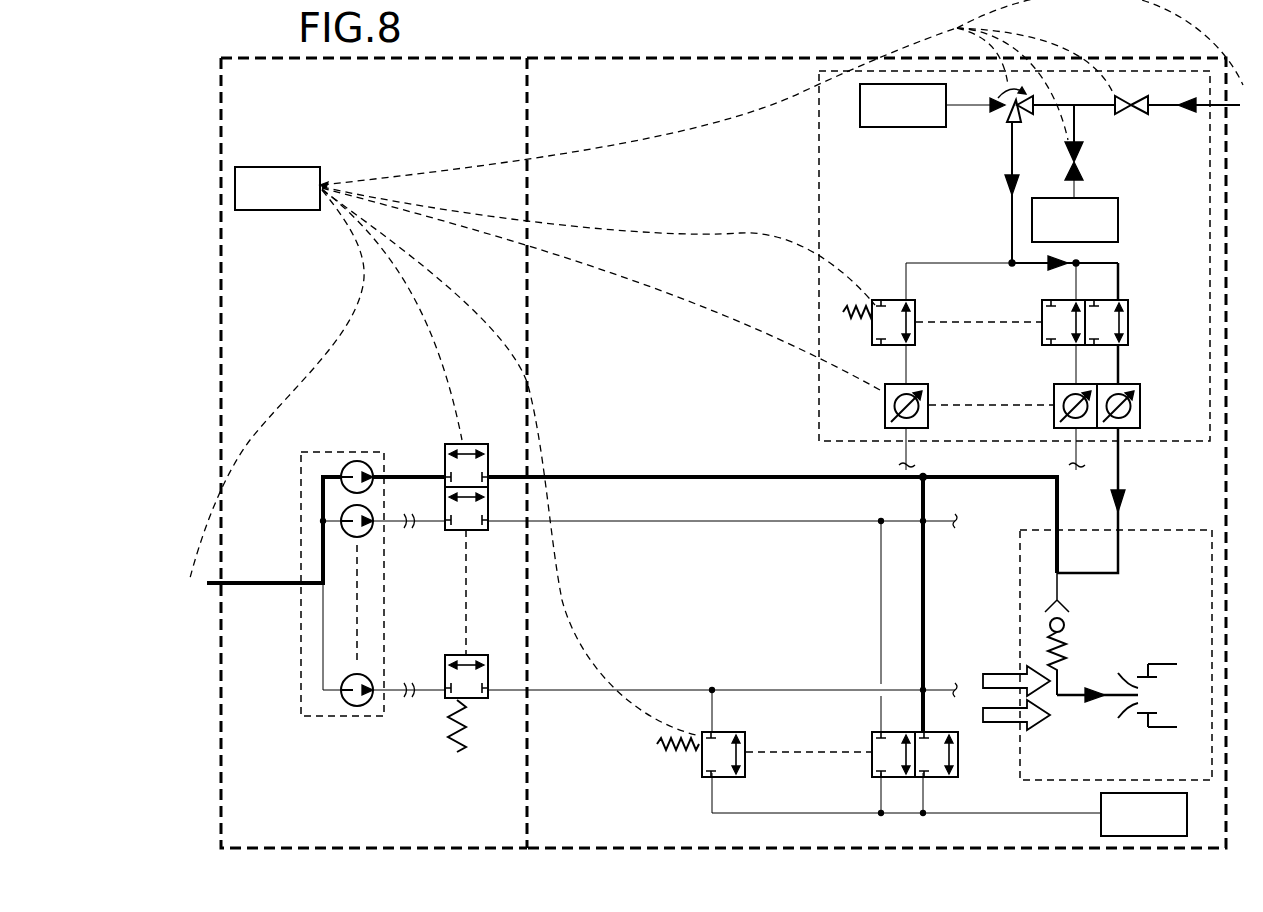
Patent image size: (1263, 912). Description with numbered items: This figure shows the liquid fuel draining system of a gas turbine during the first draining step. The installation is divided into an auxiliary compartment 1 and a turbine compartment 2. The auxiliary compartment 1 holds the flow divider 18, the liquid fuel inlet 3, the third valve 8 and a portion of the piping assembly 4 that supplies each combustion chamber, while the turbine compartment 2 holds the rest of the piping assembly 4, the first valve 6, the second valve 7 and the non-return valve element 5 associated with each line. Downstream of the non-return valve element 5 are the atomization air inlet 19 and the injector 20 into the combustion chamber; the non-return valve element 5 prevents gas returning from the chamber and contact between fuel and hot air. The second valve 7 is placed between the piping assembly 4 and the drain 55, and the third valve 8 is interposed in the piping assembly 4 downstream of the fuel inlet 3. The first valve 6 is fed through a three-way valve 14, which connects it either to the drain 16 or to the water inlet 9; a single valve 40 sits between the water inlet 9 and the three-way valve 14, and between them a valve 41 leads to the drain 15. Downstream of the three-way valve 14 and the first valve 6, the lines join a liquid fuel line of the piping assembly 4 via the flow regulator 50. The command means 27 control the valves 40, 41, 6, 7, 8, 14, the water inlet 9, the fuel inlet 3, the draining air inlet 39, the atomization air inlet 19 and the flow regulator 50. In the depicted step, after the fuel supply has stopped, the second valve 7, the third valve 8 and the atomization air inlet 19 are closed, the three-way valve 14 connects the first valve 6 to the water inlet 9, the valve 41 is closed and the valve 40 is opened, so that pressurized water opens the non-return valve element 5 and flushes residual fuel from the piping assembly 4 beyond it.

The first zone 1 is at (240, 846).
The turbine compartment 2 is at (546, 846).
The liquid fuel inlet 3 is at (316, 536).
The piping assembly 4 is at (754, 472).
The non-return valve element 5 is at (1070, 648).
The first valve 6 is at (1128, 300).
The second valve 7 is at (958, 770).
The third valve 8 is at (487, 456).
The water inlet 9 is at (1202, 105).
The three-way valve 14 is at (1034, 118).
The drain 15 is at (1118, 222).
The drain 16 is at (883, 130).
The flow divider 18 is at (343, 718).
The atomization air inlet 19 is at (1010, 723).
The injector 20 is at (1150, 740).
The command means 27 is at (278, 212).
The draining air inlet 39 is at (1004, 670).
The valve 40 is at (1131, 95).
The valve 41 is at (1084, 160).
The flow regulator 50 is at (1140, 406).
The drain 55 is at (1177, 792).